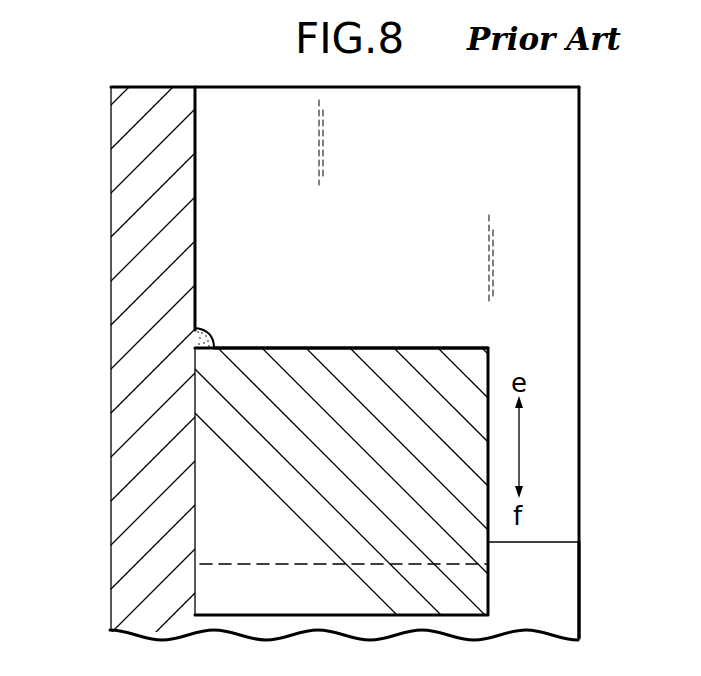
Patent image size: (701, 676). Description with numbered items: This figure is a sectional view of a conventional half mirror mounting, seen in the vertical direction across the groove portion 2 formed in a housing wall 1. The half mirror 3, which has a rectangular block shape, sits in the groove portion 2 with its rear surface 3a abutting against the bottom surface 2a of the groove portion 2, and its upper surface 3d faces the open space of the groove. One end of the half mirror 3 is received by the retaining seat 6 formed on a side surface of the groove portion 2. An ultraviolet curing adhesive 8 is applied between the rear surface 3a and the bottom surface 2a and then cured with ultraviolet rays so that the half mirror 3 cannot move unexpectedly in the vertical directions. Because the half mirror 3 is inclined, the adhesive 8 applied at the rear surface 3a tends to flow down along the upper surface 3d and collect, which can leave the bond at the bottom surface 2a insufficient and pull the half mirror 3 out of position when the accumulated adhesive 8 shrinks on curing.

The wall 1 is at (122, 163).
The groove portion 2 is at (517, 163).
The bottom surface of the groove portion 2a is at (199, 170).
The half mirror 3 is at (406, 346).
The rear surface of the half mirror 3a is at (195, 460).
The upper surface of the half mirror 3d is at (328, 346).
The retaining seat 6 is at (578, 583).
The ultraviolet curing adhesive 8 is at (205, 330).